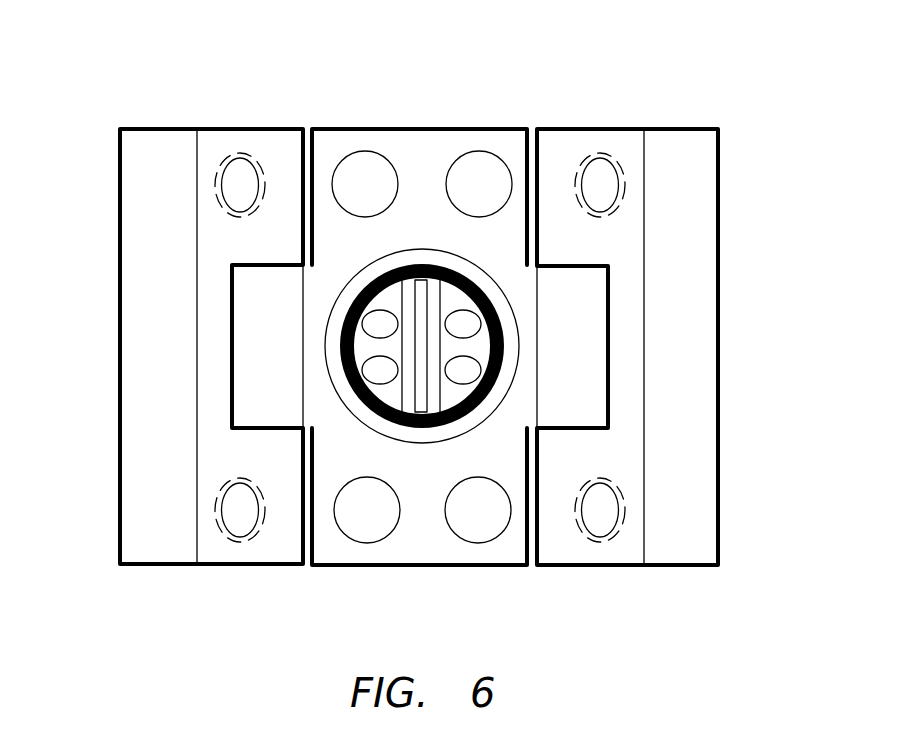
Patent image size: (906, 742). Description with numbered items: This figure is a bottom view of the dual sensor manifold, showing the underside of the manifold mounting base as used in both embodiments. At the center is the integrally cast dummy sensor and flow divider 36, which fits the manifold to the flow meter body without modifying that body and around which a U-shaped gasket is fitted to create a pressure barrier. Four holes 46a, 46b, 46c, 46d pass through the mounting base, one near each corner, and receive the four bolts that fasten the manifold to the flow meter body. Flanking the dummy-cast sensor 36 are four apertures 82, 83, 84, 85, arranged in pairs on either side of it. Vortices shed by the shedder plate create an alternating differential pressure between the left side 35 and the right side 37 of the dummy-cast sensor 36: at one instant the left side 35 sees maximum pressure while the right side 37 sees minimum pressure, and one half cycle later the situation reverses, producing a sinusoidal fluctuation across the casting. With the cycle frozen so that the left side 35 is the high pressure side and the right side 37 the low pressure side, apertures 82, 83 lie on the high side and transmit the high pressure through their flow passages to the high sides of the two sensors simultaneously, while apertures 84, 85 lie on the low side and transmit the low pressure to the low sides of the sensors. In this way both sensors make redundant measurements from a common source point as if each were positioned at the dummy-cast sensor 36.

The left side of dummy-cast sensor 35 is at (397, 403).
The dummy-cast sensor and flow divider 36 is at (468, 398).
The right side of dummy-cast sensor 37 is at (423, 362).
The hole 46a is at (355, 544).
The hole 46b is at (486, 544).
The hole 46c is at (348, 150).
The hole 46d is at (477, 150).
The aperture 82 is at (362, 325).
The aperture 83 is at (362, 372).
The aperture 84 is at (481, 323).
The aperture 85 is at (480, 372).